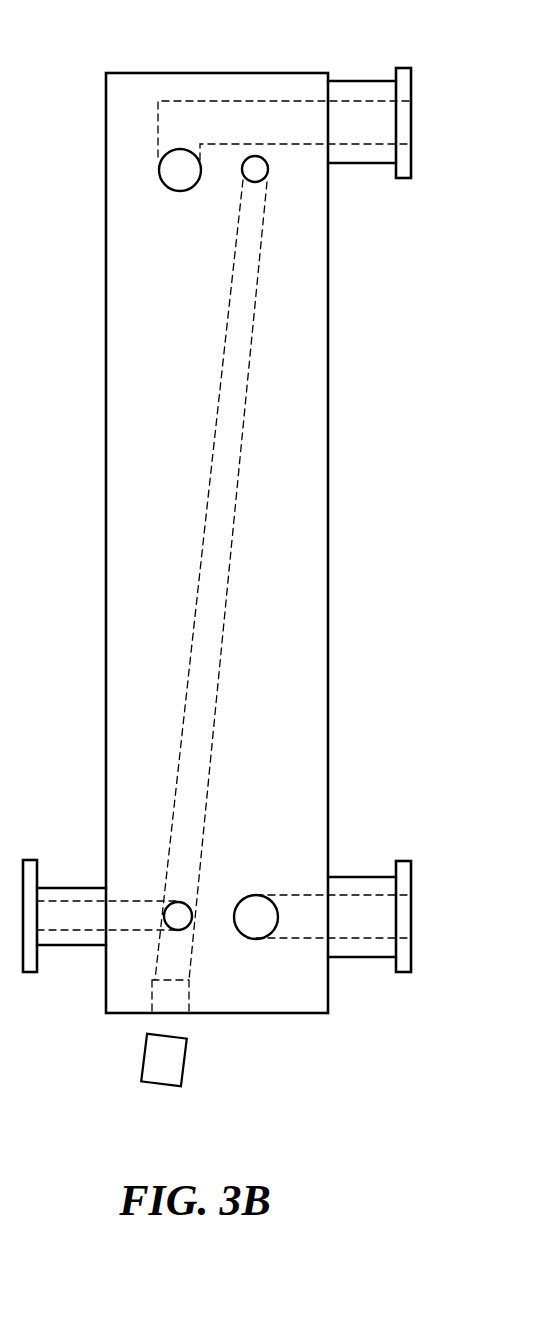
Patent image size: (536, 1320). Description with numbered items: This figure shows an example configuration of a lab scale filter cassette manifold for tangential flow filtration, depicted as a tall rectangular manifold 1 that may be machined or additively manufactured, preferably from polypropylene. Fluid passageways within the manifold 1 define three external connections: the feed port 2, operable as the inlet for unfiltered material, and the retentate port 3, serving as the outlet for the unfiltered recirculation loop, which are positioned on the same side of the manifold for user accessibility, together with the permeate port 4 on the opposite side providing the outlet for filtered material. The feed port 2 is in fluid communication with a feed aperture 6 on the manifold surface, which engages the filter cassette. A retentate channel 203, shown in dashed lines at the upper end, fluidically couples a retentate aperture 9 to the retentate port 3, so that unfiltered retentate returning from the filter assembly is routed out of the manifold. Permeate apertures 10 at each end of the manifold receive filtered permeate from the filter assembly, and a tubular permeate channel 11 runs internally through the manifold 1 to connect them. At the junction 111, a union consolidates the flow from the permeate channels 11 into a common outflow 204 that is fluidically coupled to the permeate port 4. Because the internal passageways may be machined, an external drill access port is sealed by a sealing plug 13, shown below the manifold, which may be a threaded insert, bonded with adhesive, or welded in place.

The manifold 1 is at (162, 296).
The feed port 2 is at (360, 875).
The retentate port 3 is at (370, 97).
The permeate port 4 is at (75, 890).
The feed aperture 6 is at (252, 922).
The retentate aperture 9 is at (165, 173).
The permeate aperture 10 is at (258, 170).
The permeate channel 11 is at (227, 440).
The sealing plug 13 is at (160, 1083).
The junction 111 is at (155, 935).
The retentate channel 203 is at (221, 117).
The common outflow 204 is at (133, 902).